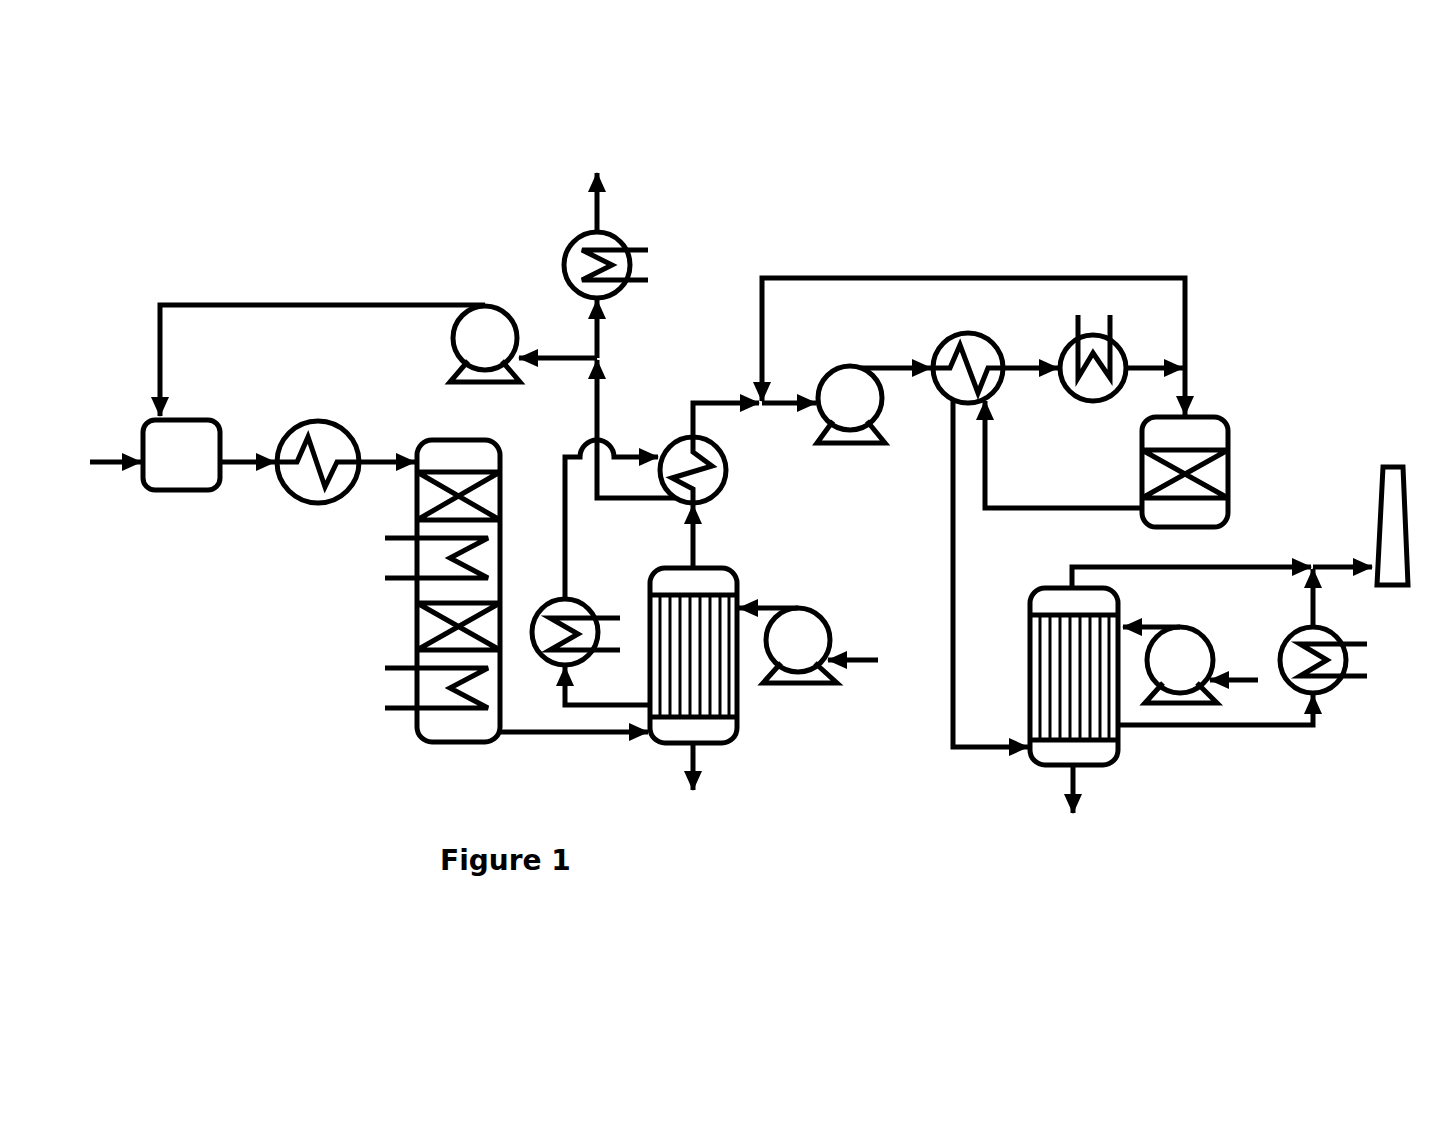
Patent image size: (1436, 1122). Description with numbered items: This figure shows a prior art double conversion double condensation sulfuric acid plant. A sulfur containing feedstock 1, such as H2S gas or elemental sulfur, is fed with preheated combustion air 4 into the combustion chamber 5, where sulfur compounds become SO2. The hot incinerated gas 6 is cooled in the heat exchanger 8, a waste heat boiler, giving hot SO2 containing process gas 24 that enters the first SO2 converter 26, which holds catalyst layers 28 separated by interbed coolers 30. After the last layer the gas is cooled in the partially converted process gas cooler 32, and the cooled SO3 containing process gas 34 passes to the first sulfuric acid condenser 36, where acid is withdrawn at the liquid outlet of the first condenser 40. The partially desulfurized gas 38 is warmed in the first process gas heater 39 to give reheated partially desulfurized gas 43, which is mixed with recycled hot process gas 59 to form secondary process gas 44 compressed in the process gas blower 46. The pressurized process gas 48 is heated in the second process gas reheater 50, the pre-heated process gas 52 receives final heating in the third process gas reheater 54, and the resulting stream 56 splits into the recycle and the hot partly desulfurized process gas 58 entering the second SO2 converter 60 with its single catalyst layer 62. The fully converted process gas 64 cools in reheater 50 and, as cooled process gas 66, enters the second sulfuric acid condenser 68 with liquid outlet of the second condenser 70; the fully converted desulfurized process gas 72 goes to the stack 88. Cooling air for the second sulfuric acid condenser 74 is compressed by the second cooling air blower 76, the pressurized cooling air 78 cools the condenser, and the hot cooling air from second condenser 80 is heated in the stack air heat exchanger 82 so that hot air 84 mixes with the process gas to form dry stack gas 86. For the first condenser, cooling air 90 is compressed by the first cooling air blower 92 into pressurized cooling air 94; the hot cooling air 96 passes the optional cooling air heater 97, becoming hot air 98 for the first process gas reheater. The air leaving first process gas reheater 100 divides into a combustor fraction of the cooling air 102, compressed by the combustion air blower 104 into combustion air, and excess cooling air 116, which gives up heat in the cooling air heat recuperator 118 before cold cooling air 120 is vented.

The sulfur containing feedstock 1 is at (115, 482).
The combustion air 4 is at (308, 360).
The combustion chamber 5 is at (181, 473).
The hot incinerated gas 6 is at (247, 478).
The heat exchanger 8 is at (318, 479).
The hot SO2 containing process gas 24 is at (386, 440).
The first SO2 converter 26 is at (467, 572).
The catalyst layer 28 is at (436, 561).
The interbed cooler 30 is at (426, 558).
The partially converted process gas cooler 32 is at (429, 688).
The cooled SO3 containing process gas 34 is at (574, 753).
The first sulfuric acid condenser 36 is at (712, 670).
The partially desulfurized gas 38 is at (716, 536).
The first process gas reheater 39 is at (713, 472).
The liquid outlet of the first condenser 40 is at (693, 785).
The reheated partially desulfurized gas 43 is at (724, 401).
The secondary process gas 44 is at (789, 424).
The process gas blower 46 is at (557, 424).
The pressurized process gas 48 is at (896, 391).
The second process gas reheater 50 is at (968, 350).
The pre-heated process gas 52 is at (1030, 388).
The third process gas reheater 54 is at (1107, 351).
The hot stream 56 is at (1154, 388).
The hot partly desulfurized process gas 58 is at (1208, 394).
The recycled hot process gas 59 is at (973, 320).
The second SO2 converter 60 is at (1163, 472).
The catalyst layer 62 is at (1206, 474).
The fully converted process gas 64 is at (1063, 454).
The cooled process gas 66 is at (989, 594).
The second sulfuric acid condenser 68 is at (1092, 695).
The liquid outlet of the second condenser 70 is at (1075, 806).
The fully converted desulfurized process gas 72 is at (1189, 558).
The cooling air for the second sulfuric acid condenser 74 is at (1239, 699).
The second cooling air blower 76 is at (1194, 651).
The pressurized cooling air for second sulfuric acid condenser 78 is at (1151, 608).
The hot cooling air from second condenser 80 is at (1215, 730).
The stack air heat exchanger 82 is at (1332, 672).
The hot air 84 is at (1336, 598).
The stack gas 86 is at (1342, 547).
The stack 88 is at (1374, 520).
The cooling air for first sulfuric acid condenser 90 is at (858, 681).
The first cooling air blower 92 is at (809, 630).
The pressurized cooling air for first sulfuric acid condenser 94 is at (768, 587).
The hot cooling air 96 is at (607, 686).
The cooling air heater 97 is at (583, 620).
The hot air to the first process gas reheater 98 is at (611, 520).
The air leaving first process gas reheater 100 is at (634, 429).
The combustor fraction of the cooling air 102 is at (558, 338).
The combustion air blower 104 is at (483, 324).
The excess cooling air 116 is at (631, 329).
The cooling air heat recuperator 118 is at (634, 265).
The cold cooling air 120 is at (630, 202).